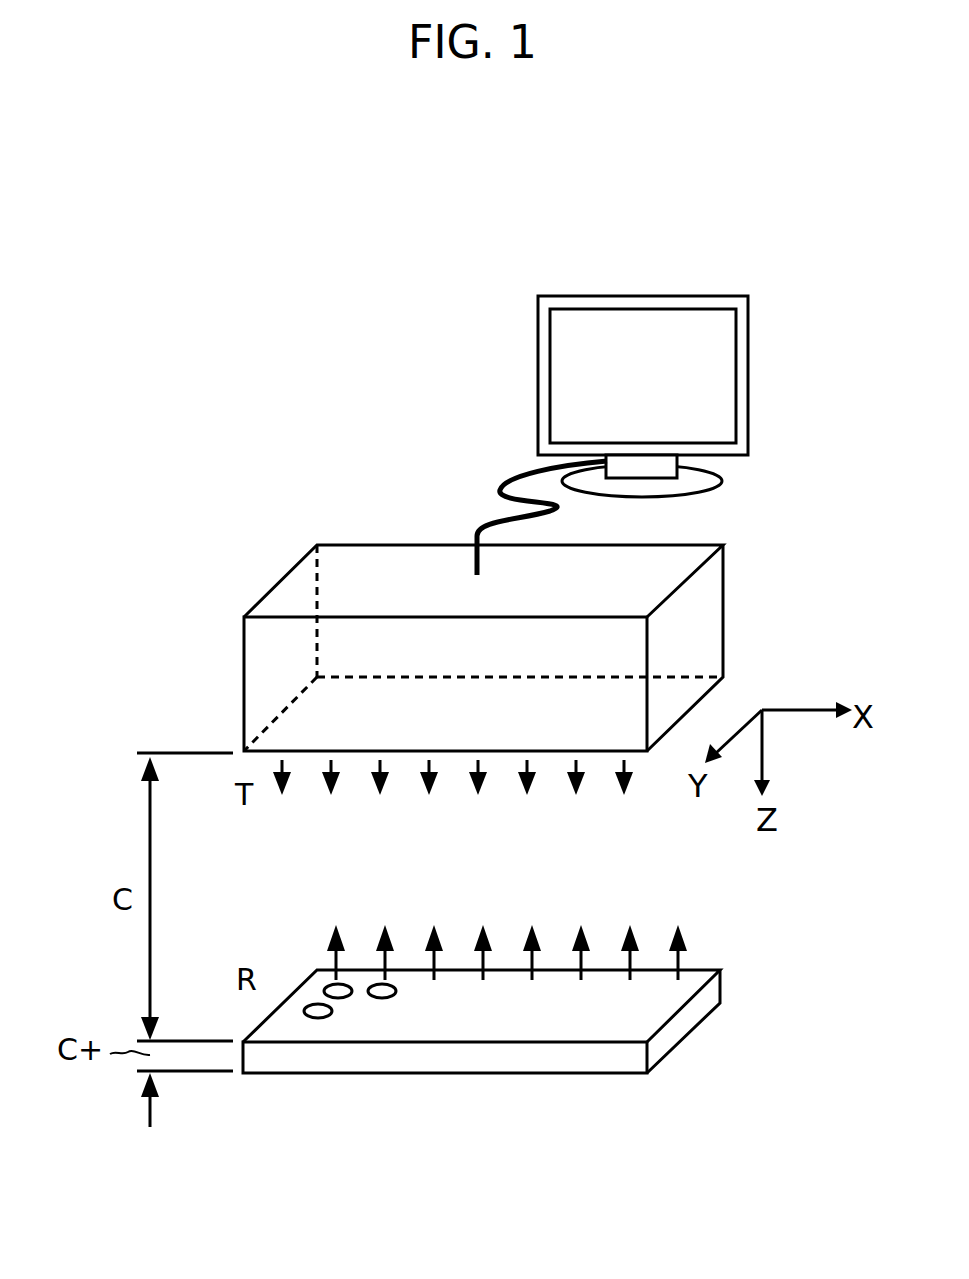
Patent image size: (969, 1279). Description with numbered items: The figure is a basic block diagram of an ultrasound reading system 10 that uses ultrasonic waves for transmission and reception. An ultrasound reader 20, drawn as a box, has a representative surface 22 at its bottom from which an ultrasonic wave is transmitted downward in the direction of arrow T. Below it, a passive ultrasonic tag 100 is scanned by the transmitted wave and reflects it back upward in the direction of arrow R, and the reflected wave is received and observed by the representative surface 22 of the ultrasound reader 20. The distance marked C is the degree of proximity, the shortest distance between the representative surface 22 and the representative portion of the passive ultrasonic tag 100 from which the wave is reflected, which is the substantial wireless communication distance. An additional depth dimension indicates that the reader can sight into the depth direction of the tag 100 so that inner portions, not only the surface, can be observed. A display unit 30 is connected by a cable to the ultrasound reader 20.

The ultrasound reading system 10 is at (188, 420).
The ultrasound reader 20 is at (715, 625).
The representative surface 22 is at (508, 731).
The display monitor 30 is at (748, 376).
The passive ultrasonic tag 100 is at (710, 968).